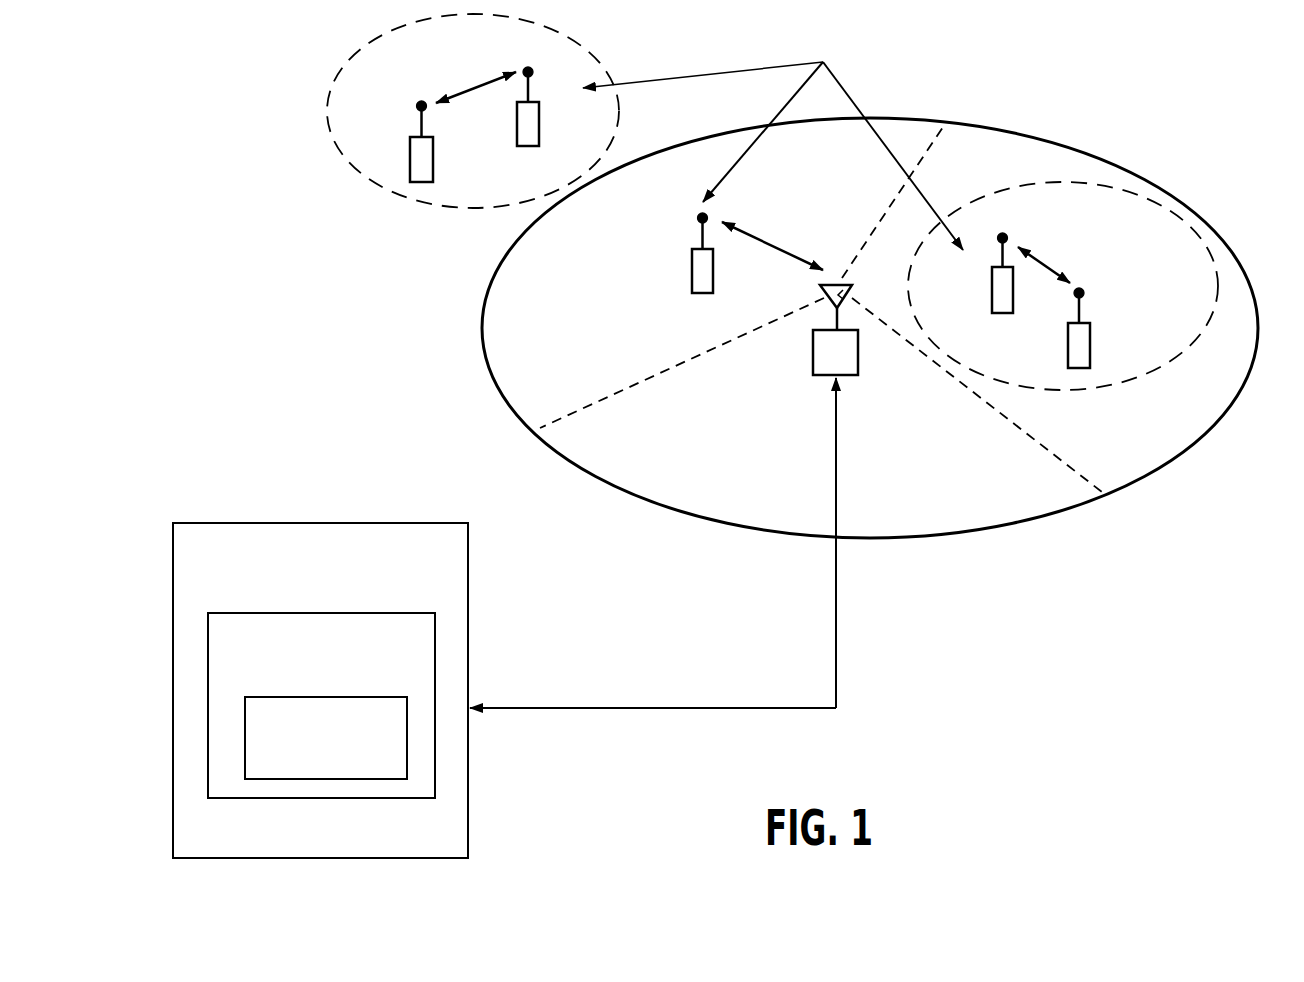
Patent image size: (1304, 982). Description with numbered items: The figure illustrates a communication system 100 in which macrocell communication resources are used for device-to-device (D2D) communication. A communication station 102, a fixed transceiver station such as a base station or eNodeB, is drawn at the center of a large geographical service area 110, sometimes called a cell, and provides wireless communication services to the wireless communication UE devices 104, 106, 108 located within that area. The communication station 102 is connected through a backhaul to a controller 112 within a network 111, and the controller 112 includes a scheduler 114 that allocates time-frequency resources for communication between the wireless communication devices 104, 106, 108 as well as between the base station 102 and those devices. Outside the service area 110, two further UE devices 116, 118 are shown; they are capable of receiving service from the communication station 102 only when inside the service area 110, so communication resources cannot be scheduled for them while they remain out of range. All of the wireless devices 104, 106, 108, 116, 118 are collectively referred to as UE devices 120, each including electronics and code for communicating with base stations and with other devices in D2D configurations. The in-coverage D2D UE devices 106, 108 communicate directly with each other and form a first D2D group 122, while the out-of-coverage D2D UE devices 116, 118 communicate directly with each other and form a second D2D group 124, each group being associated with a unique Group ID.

The communication system 100 is at (1022, 619).
The communication station 102 is at (850, 375).
The wireless communication UE device 104 is at (713, 272).
The in-coverage D2D UE device 106 is at (1090, 345).
The in-coverage D2D UE device 108 is at (1005, 313).
The geographical service area 110 is at (1042, 137).
The network 111 is at (334, 585).
The controller 112 is at (337, 678).
The scheduler 114 is at (342, 763).
The out-of-coverage D2D UE device 116 is at (433, 160).
The out-of-coverage D2D UE device 118 is at (539, 124).
The UE devices 120 is at (773, 135).
The first D2D group 122 is at (1173, 211).
The second D2D group 124 is at (593, 58).